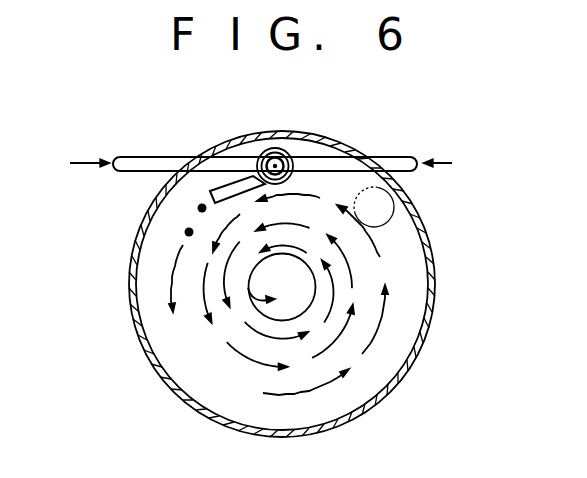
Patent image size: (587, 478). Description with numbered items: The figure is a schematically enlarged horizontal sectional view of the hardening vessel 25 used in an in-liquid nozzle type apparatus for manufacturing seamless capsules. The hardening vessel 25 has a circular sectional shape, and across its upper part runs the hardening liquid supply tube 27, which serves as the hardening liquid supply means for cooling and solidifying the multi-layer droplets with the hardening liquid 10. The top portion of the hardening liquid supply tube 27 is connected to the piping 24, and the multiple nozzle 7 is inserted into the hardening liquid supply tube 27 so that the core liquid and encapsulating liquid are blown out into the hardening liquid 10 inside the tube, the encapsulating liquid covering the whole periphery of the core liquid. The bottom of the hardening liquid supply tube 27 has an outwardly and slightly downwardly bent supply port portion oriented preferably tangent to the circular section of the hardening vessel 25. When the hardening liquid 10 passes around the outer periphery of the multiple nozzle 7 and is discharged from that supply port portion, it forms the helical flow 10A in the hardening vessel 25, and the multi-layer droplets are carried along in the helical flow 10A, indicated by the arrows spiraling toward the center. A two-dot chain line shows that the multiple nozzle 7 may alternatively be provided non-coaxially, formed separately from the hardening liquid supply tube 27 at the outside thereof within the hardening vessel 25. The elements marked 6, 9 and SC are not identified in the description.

The rotor hub 6 is at (285, 150).
The multiple nozzle 7 is at (270, 150).
The pipe 9 is at (392, 157).
The hardening liquid 10 is at (376, 369).
The helical flow 10A is at (385, 313).
The piping 24 is at (152, 157).
The hardening vessel 25 is at (430, 272).
The hardening liquid supply tube 27 is at (197, 193).
The solid particles SC is at (185, 233).